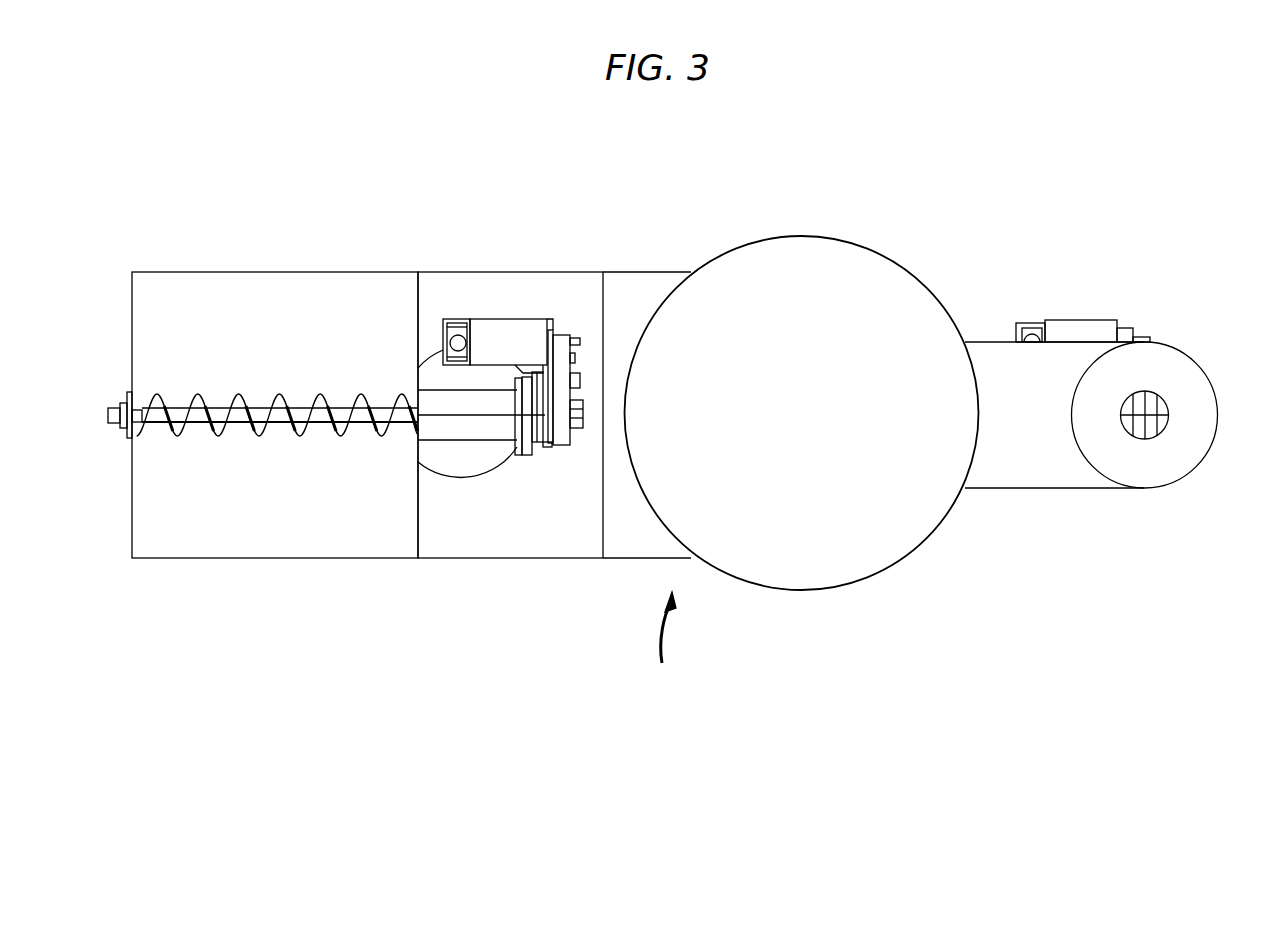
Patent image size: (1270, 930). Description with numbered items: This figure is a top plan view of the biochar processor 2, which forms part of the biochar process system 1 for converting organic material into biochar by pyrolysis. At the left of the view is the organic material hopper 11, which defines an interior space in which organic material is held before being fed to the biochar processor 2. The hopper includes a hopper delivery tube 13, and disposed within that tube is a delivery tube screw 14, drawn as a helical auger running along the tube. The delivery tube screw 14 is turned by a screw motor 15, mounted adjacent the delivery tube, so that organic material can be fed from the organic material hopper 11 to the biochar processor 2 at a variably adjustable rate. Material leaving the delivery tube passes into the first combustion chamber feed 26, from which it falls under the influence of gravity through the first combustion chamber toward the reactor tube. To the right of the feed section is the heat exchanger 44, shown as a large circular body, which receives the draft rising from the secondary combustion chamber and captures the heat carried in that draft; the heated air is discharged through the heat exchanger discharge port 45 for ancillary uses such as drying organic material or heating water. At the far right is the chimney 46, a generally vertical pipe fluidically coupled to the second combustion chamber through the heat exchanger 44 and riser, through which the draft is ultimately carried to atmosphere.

The biochar process system 1 is at (1022, 201).
The biochar processor 2 is at (669, 645).
The organic material hopper 11 is at (132, 322).
The hopper delivery tube 13 is at (477, 480).
The delivery tube screw 14 is at (258, 408).
The screw motor 15 is at (505, 319).
The first combustion chamber feed 26 is at (498, 463).
The heat exchanger 44 is at (762, 334).
The heat exchanger discharge port 45 is at (638, 311).
The chimney 46 is at (1208, 452).